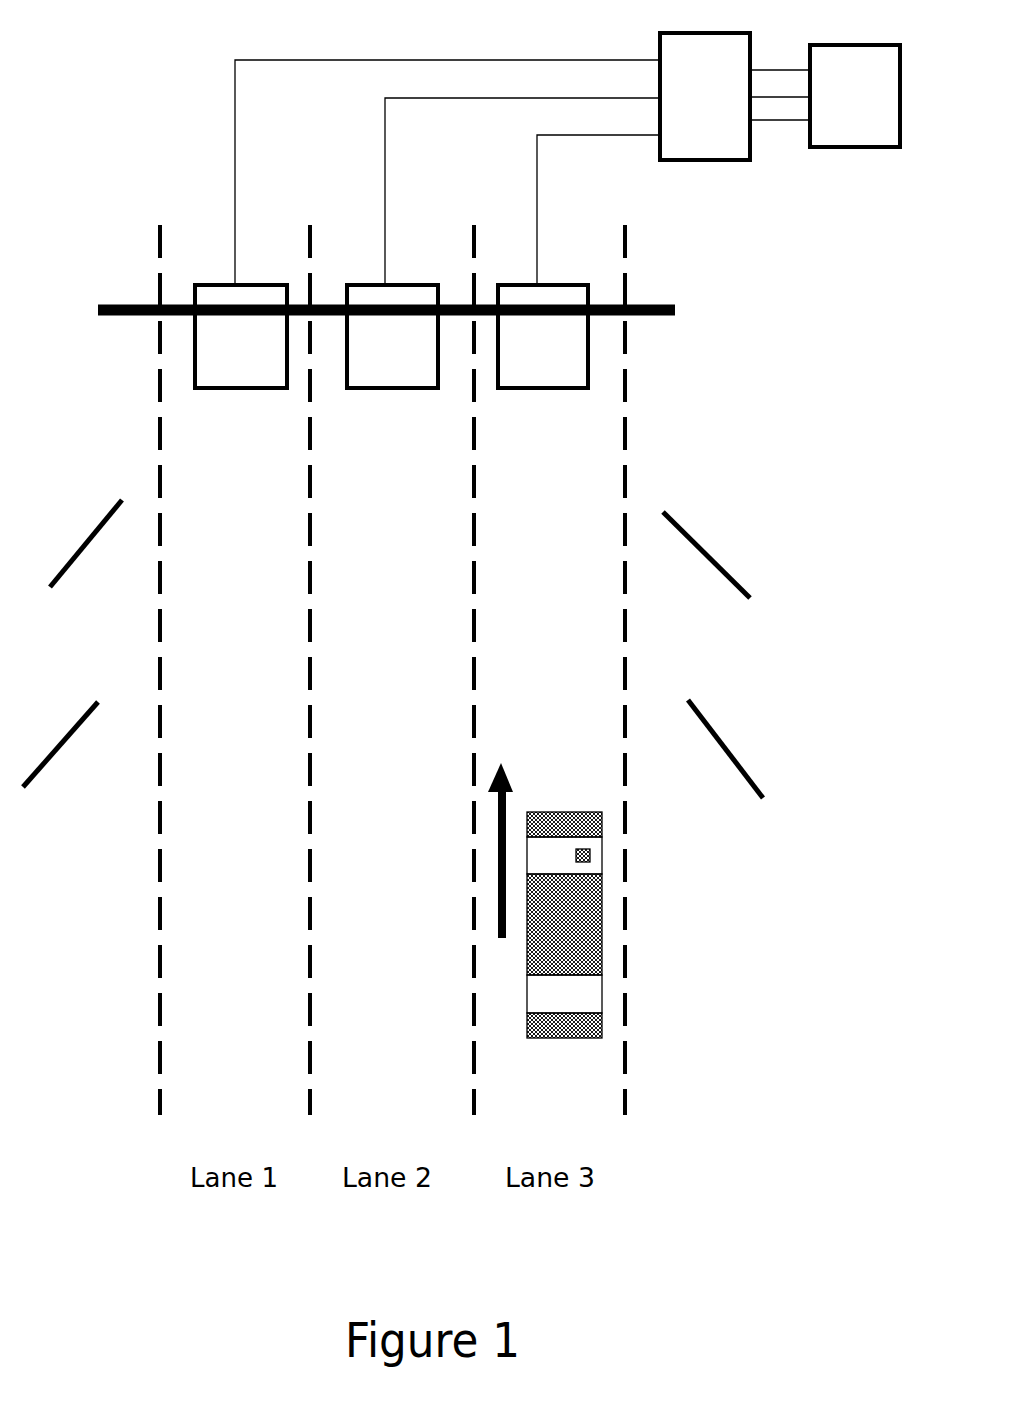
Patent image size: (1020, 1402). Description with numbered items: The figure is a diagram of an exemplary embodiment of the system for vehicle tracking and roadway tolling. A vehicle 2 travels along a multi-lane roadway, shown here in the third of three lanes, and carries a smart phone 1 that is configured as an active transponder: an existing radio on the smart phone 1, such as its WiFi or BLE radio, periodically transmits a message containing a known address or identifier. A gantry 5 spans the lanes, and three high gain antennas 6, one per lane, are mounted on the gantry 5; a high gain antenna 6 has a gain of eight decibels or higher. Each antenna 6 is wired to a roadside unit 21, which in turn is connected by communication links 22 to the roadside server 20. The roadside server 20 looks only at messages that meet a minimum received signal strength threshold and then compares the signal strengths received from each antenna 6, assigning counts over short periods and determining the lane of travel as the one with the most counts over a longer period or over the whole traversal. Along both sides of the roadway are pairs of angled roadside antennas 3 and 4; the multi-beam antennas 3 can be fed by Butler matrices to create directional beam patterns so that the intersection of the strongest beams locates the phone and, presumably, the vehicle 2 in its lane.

The smart phone 1 is at (590, 850).
The vehicle 2 is at (542, 1040).
The multi-beam antenna 3 is at (76, 718).
The reflector / roadside unit (first pair) 4 is at (88, 532).
The gantry 5 is at (651, 318).
The high gain antenna 6 is at (222, 283).
The roadside server 20 is at (826, 149).
The control unit 21 is at (690, 162).
The communication link 22 is at (775, 122).